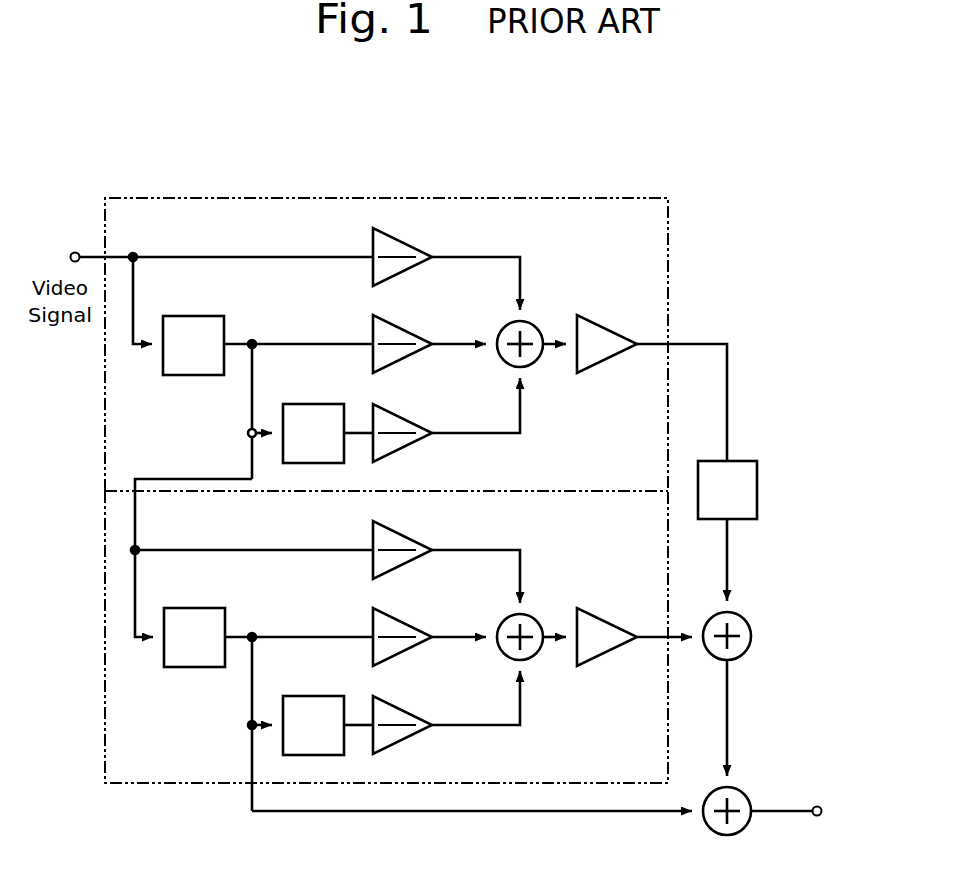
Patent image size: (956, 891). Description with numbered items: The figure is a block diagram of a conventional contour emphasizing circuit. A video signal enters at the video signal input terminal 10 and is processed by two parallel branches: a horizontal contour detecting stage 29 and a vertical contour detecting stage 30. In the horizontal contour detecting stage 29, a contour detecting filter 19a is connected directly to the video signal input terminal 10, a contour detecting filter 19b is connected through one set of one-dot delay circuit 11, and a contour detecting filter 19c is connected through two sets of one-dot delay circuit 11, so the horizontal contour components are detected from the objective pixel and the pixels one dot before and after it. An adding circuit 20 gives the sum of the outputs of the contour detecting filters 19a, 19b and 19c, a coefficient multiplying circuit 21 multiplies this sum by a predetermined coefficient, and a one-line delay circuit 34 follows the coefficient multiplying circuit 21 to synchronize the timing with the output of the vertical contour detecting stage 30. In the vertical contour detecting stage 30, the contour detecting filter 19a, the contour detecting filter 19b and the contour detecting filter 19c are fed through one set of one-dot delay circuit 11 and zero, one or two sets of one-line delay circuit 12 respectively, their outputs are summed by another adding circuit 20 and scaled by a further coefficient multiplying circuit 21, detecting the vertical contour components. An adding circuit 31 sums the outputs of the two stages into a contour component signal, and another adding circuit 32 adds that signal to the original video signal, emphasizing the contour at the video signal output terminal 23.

The video signal input terminal 10 is at (75, 252).
The 1-dot delay circuit 11 is at (182, 323).
The 1-line delay circuit 12 is at (182, 617).
The contour detecting filter 19a is at (420, 253).
The contour detecting filter 19b is at (420, 340).
The contour detecting filter 19c is at (420, 429).
The adding circuit 20 is at (532, 343).
The coefficient multiplying circuit 21 is at (598, 343).
The video signal output terminal 23 is at (815, 818).
The horizontal contour detecting stage 29 is at (290, 200).
The vertical contour detecting stage 30 is at (148, 785).
The adding circuit 31 is at (737, 643).
The adding circuit 32 is at (738, 805).
The 1-line delay circuit 34 is at (748, 493).